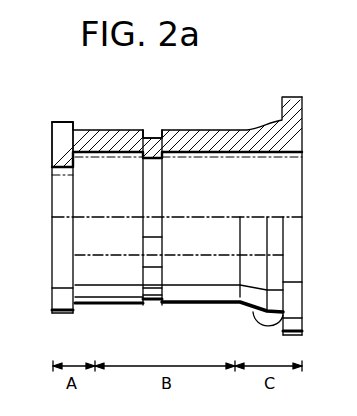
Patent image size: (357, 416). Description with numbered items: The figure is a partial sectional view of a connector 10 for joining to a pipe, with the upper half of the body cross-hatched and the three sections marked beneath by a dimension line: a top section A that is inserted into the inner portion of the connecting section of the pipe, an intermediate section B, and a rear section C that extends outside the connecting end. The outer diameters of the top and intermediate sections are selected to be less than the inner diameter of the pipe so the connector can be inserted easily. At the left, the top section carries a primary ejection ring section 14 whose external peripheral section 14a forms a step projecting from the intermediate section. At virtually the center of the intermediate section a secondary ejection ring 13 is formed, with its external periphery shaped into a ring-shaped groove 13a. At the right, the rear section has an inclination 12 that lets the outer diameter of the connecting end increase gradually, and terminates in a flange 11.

The connector 10 is at (247, 151).
The flange 11 is at (293, 318).
The inclination 12 is at (287, 317).
The secondary ejection ring 13 is at (162, 171).
The ring-shaped groove 13a is at (162, 300).
The primary ejection ring section 14 is at (60, 150).
The external peripheral section 14a is at (62, 122).